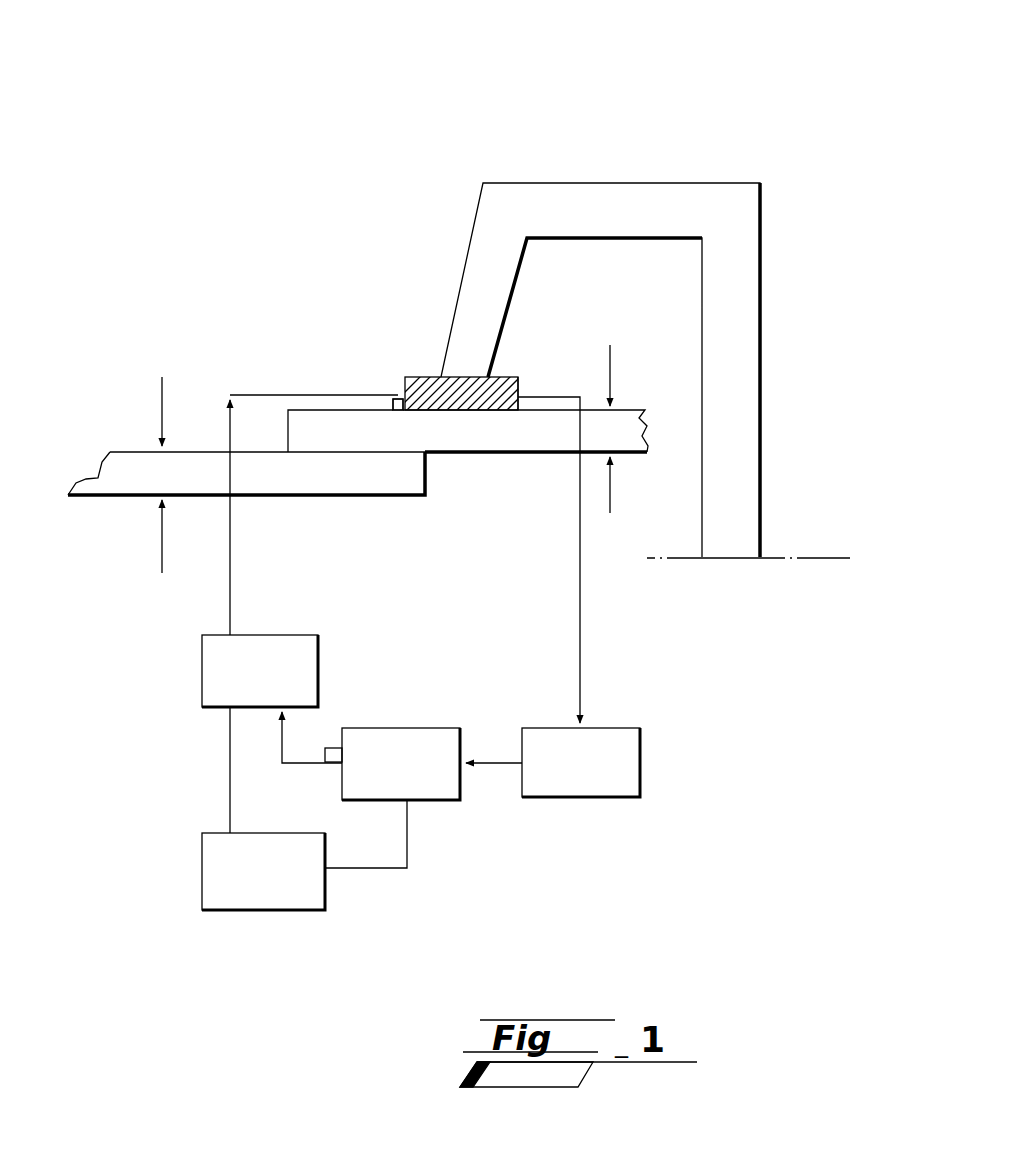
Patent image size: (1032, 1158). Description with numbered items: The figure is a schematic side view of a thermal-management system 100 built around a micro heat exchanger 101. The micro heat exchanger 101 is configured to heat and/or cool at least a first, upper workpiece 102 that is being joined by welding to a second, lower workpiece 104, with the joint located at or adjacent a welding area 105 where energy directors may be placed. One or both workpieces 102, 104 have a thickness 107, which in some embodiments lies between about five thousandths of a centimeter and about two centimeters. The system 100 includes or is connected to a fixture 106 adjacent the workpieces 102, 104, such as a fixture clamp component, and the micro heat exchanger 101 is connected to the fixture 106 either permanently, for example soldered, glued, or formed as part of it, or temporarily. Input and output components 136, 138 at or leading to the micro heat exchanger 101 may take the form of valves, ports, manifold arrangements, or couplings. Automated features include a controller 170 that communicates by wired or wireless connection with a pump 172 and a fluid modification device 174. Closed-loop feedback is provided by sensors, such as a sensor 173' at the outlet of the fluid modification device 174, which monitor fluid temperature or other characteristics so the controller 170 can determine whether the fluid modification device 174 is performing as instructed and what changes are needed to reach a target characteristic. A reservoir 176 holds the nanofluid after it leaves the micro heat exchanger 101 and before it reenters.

The thermal-management system 100 is at (180, 186).
The micro heat exchanger 101 is at (416, 371).
The first workpiece 102 is at (477, 456).
The second workpiece 104 is at (342, 498).
The welding area 105 is at (307, 402).
The fixture 106 is at (778, 257).
The thickness 107 is at (160, 403).
The input component 136 is at (392, 391).
The output component 138 is at (530, 378).
The controller 170 is at (263, 871).
The pump 172 is at (300, 614).
The sensor 173' is at (400, 707).
The fluid modification device 174 is at (371, 790).
The reservoir 176 is at (553, 597).